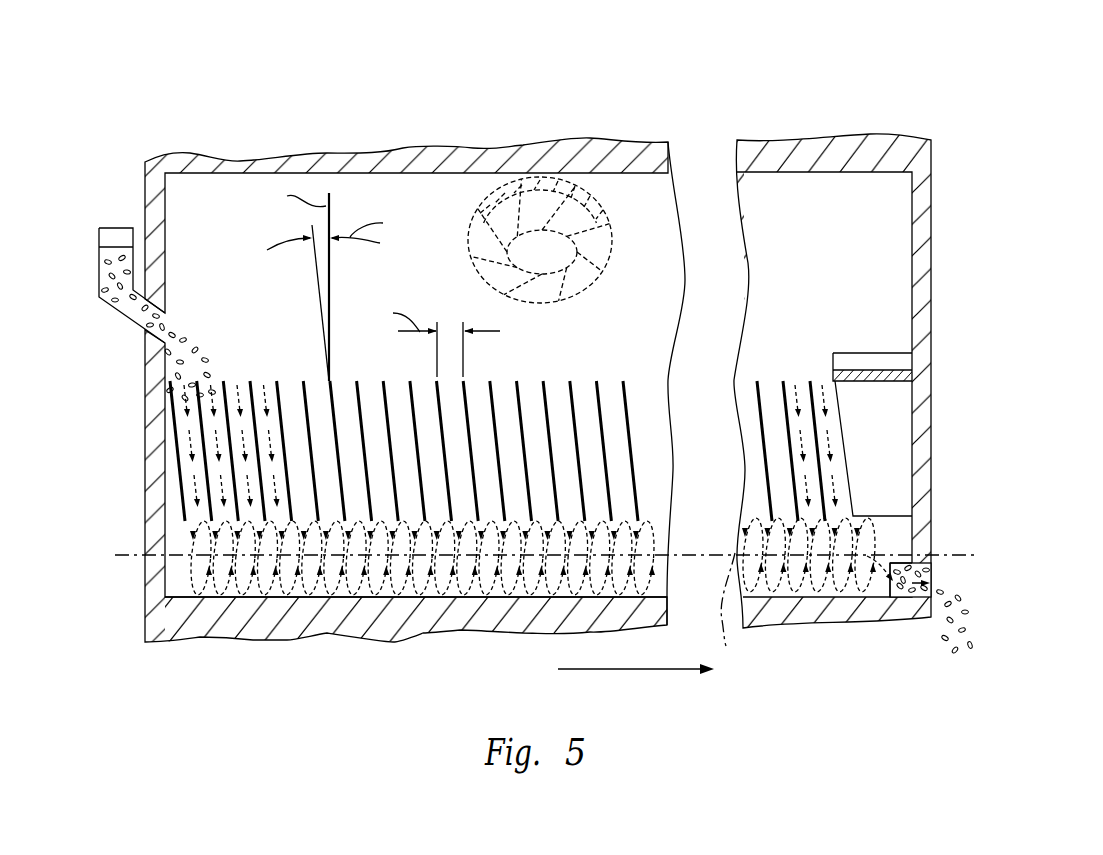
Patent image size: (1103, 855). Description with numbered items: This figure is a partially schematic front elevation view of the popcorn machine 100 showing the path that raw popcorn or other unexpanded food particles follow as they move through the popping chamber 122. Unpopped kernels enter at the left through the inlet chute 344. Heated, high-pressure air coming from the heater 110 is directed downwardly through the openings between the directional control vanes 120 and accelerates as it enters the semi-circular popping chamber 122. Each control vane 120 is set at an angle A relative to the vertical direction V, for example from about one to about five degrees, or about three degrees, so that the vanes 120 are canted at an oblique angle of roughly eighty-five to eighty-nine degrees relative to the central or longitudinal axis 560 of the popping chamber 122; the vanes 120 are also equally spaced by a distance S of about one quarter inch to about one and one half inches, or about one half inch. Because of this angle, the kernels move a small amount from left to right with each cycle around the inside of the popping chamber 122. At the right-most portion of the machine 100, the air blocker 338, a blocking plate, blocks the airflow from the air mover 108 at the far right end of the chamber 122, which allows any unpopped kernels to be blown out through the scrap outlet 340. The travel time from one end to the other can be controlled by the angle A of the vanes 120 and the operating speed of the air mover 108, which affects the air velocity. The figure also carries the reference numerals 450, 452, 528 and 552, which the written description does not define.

The popcorn machine 100 is at (980, 112).
The air mover 108 is at (478, 208).
The heater 110 is at (932, 455).
The directional control vanes 120 is at (548, 390).
The popping chamber 122 is at (196, 573).
The air blocker 338 is at (873, 360).
The scrap outlet 340 is at (935, 590).
The inlet chute 344 is at (103, 235).
The downward air flow 450 is at (197, 497).
The vortices 452 is at (338, 577).
The flow toward outlet 528 is at (890, 545).
The direction of travel 552 is at (632, 670).
The central or longitudinal axis 560 is at (726, 646).